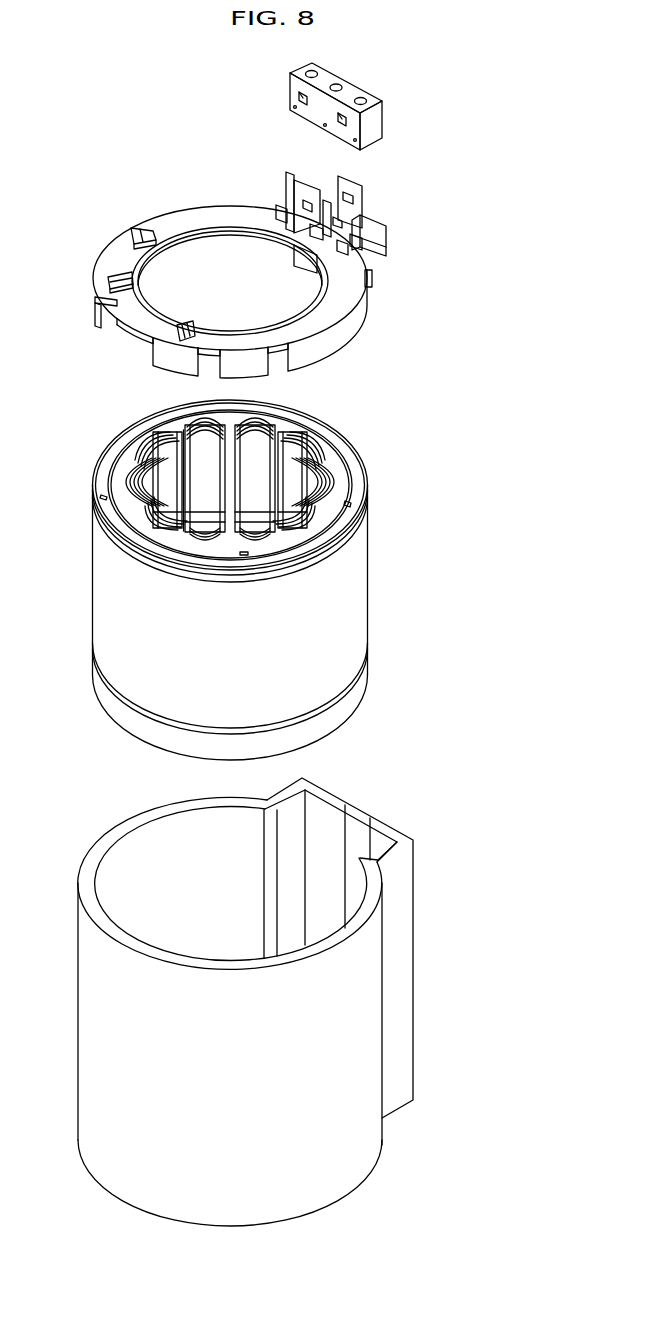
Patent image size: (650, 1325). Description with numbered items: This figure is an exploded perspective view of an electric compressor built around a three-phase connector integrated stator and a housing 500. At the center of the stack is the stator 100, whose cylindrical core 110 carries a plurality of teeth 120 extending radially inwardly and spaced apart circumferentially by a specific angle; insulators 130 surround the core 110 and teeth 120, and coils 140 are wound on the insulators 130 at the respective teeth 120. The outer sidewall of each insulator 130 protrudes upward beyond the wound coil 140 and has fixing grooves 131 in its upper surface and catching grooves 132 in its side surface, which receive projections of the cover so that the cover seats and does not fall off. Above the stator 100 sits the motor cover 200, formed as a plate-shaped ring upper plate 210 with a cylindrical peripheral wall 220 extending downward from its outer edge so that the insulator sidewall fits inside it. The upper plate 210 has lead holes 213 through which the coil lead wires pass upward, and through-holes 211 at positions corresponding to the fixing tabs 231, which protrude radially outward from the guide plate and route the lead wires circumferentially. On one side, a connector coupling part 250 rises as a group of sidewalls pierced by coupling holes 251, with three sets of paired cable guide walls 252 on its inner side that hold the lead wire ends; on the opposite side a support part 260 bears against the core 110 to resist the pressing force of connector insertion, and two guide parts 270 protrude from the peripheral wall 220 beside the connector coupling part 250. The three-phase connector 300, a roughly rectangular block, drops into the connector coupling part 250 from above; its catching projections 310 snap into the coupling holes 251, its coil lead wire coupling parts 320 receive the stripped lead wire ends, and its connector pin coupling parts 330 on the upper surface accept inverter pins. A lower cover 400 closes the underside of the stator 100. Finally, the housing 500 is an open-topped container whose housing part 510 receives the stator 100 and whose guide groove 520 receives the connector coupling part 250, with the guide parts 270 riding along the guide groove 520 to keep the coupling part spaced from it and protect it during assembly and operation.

The stator 100 is at (242, 579).
The core 110 is at (360, 607).
The teeth 120 is at (143, 447).
The insulator 130 is at (317, 437).
The fixing groove 131 is at (350, 437).
The catching groove 132 is at (247, 555).
The coil 140 is at (167, 467).
The motor cover 200 is at (241, 263).
The upper plate 210 is at (360, 282).
The through-hole 211 is at (108, 284).
The lead hole 213 is at (292, 345).
The peripheral wall 220 is at (358, 320).
The fixing tab 231 is at (130, 230).
The connector coupling part 250 is at (322, 202).
The coupling hole 251 is at (387, 228).
The cable guide wall 252 is at (310, 228).
The support part 260 is at (372, 278).
The guide part 270 is at (368, 253).
The 3-phase connector 300 is at (326, 104).
The catching projection 310 is at (290, 92).
The coil lead wire coupling part 320 is at (290, 108).
The connector pin coupling part 330 is at (300, 73).
The lower cover 400 is at (367, 688).
The housing 500 is at (306, 1002).
The housing part 510 is at (175, 838).
The guide groove 520 is at (363, 822).